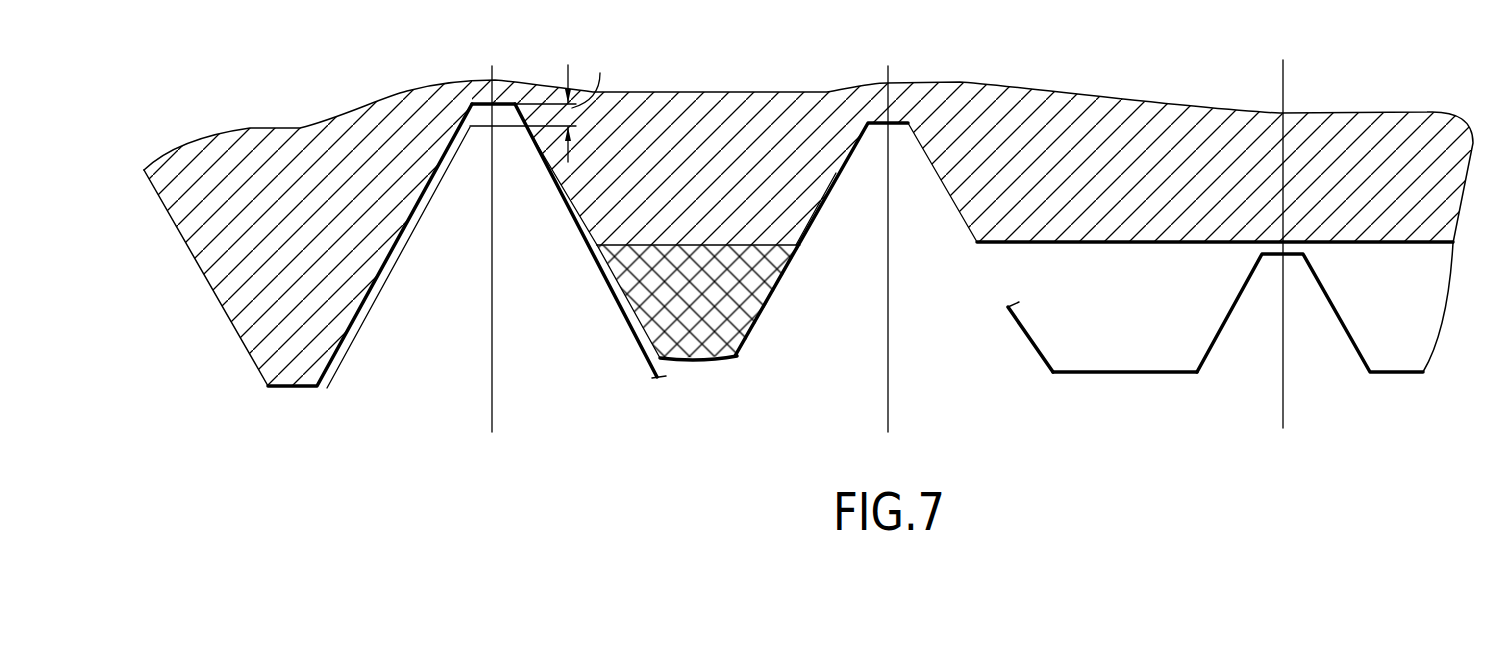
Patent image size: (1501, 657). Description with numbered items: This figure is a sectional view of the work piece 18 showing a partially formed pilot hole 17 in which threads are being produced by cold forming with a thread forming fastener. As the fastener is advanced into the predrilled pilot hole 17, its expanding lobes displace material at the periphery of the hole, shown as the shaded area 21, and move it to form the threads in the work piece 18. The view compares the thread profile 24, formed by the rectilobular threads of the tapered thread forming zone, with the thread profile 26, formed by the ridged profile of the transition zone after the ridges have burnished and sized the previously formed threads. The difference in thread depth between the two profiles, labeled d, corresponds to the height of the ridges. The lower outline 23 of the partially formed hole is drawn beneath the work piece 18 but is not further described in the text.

The work piece 18 is at (1123, 108).
The thread profile 26 is at (485, 104).
The thread profile 24 is at (563, 218).
The displaced material 21 is at (752, 310).
The pilot hole 17 is at (1135, 317).
The belt tooth tip 23 is at (1127, 373).